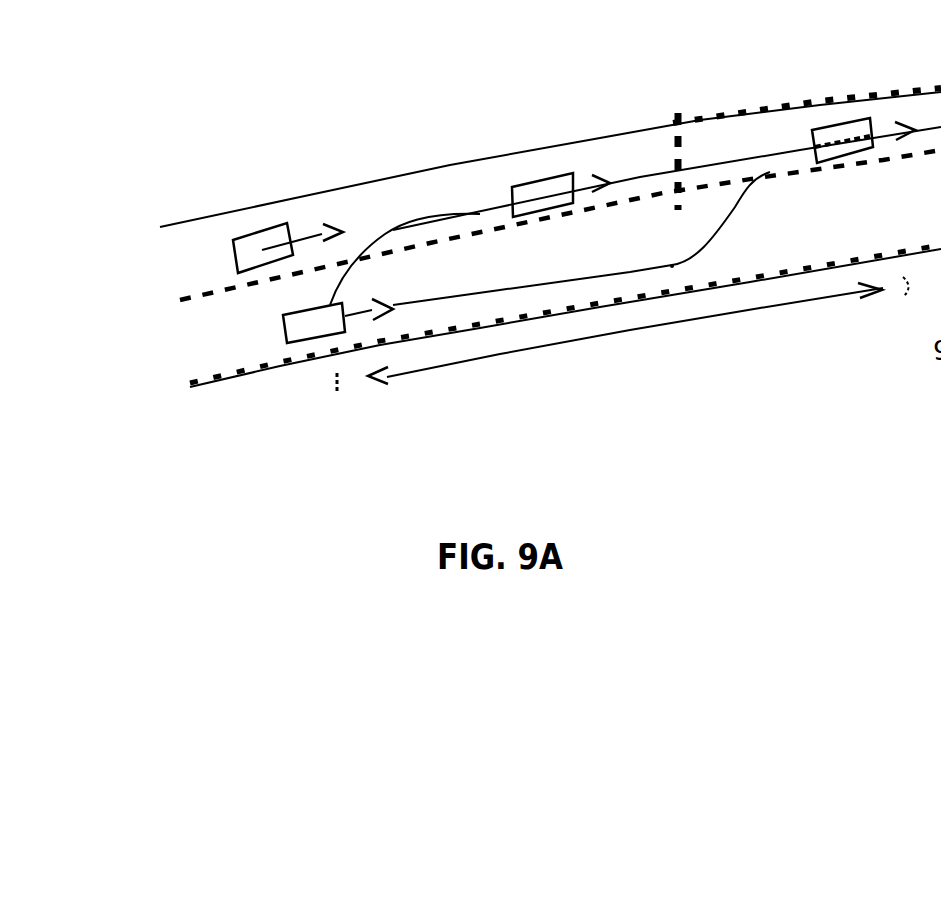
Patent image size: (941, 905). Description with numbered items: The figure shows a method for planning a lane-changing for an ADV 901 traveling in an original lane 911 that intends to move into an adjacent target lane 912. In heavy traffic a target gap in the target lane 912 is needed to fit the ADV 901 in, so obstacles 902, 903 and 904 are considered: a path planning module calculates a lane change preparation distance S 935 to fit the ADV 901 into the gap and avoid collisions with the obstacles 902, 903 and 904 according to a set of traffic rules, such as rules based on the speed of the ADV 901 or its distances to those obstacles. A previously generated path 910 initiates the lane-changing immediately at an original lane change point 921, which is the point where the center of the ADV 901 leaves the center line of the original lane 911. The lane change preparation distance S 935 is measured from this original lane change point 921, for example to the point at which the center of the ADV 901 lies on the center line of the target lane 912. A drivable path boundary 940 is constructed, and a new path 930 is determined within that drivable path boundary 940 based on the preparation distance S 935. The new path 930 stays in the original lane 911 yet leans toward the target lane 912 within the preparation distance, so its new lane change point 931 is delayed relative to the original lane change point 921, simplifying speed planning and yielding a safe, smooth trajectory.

The ADV 901 is at (300, 343).
The obstacle 902 is at (253, 237).
The obstacle 903 is at (538, 180).
The obstacle 904 is at (827, 127).
The previously generated path 910 is at (417, 213).
The original lane 911 is at (243, 340).
The target lane 912 is at (203, 263).
The original lane change point 921 is at (308, 325).
The new path 930 is at (748, 203).
The new lane change point 931 is at (672, 268).
The lane change preparation distance S 935 is at (620, 367).
The drivable path boundary 940 is at (697, 113).